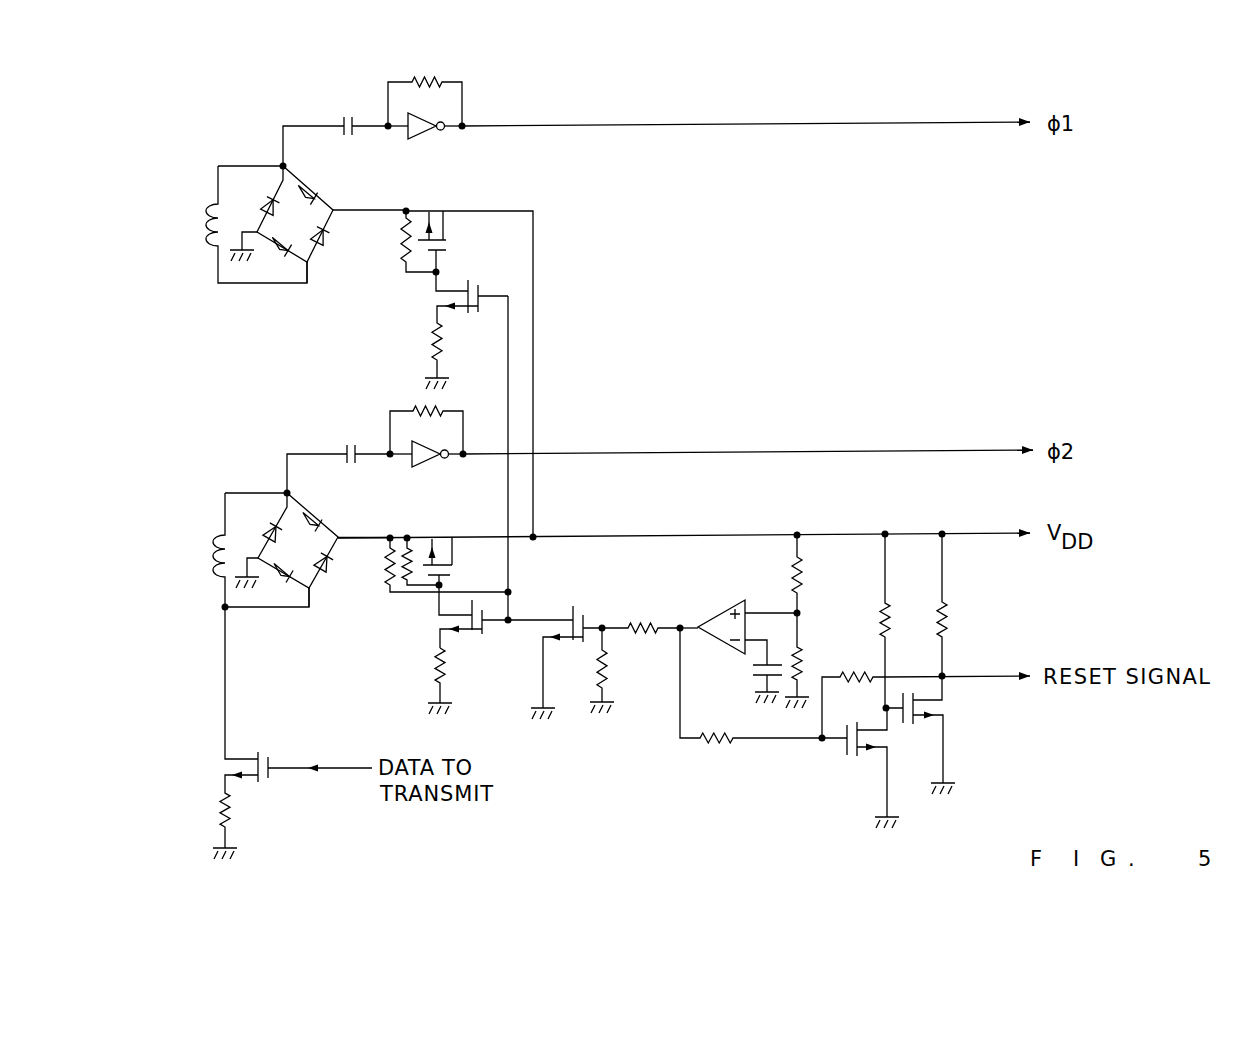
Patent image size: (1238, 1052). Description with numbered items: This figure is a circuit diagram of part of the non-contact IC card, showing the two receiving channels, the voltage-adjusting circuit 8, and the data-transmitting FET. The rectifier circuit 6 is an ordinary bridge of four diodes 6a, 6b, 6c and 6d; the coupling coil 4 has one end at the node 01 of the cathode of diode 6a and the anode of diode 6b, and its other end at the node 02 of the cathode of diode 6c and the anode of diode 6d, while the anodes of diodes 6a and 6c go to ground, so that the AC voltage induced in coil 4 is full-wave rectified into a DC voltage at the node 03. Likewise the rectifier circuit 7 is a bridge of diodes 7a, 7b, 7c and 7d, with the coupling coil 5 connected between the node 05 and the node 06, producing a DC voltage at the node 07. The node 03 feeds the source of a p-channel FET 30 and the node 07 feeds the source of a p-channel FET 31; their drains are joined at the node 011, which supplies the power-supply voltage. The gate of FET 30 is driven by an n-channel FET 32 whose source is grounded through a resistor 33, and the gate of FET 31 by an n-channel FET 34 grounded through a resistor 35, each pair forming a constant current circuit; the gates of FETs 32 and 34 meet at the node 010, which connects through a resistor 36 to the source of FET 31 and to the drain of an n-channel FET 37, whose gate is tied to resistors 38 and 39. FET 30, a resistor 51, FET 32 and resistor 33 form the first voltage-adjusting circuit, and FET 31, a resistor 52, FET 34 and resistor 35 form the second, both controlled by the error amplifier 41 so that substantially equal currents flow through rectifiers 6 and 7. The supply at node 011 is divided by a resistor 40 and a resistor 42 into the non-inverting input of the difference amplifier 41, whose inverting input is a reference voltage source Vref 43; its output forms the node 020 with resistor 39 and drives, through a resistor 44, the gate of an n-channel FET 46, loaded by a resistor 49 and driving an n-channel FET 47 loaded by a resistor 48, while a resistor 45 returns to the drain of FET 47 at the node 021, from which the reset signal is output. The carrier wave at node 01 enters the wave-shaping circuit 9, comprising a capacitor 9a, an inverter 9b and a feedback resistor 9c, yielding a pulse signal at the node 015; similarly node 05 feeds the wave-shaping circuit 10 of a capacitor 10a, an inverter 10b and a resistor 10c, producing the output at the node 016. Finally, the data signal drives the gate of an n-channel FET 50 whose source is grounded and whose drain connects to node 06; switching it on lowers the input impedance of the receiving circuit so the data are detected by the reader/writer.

The coupling coil 4 is at (206, 246).
The coupling coil 5 is at (213, 560).
The rectifier circuit 6 is at (260, 140).
The diode 6a is at (263, 200).
The diode 6b is at (318, 192).
The diode 6c is at (280, 266).
The diode 6d is at (331, 239).
The rectifier circuit 7 is at (260, 468).
The diode 7a is at (268, 533).
The diode 7b is at (320, 500).
The diode 7c is at (275, 590).
The diode 7d is at (326, 576).
The voltage-adjusting circuit 8 is at (658, 706).
The wave-shaping circuit 9 is at (370, 50).
The capacitor 9a is at (348, 115).
The inverter 9b is at (428, 133).
The resistor 9c is at (428, 78).
The wave-shaping circuit 10 is at (358, 363).
The capacitor 10a is at (352, 445).
The inverter 10b is at (428, 463).
The resistor 10c is at (413, 402).
The p-channel MOSFET 30 is at (451, 243).
The p-channel MOSFET 31 is at (445, 537).
The n-channel MOSFET 32 is at (472, 291).
The resistor 33 is at (448, 345).
The n-channel MOSFET 34 is at (481, 638).
The resistor 35 is at (434, 665).
The resistor 36 is at (386, 563).
The n-channel MOSFET 37 is at (583, 618).
The resistor 38 is at (583, 669).
The resistor 39 is at (640, 625).
The resistor 40 is at (792, 573).
The difference amplifier 41 is at (718, 636).
The resistor 42 is at (813, 652).
The reference voltage source Vref 43 is at (756, 678).
The resistor 44 is at (722, 743).
The resistor 45 is at (853, 672).
The n-channel MOSFET 46 is at (848, 752).
The n-channel MOSFET 47 is at (946, 716).
The resistor 48 is at (948, 618).
The resistor 49 is at (882, 606).
The n-channel MOSFET 50 is at (270, 756).
The resistor 51 is at (402, 263).
The resistor 52 is at (406, 586).
The node O1 01 is at (288, 169).
The node O2 02 is at (312, 268).
The node O3 03 is at (340, 210).
The node O5 05 is at (292, 500).
The node O6 06 is at (311, 598).
The node O7 07 is at (345, 536).
The node O10 010 is at (510, 594).
The node O11 011 is at (536, 535).
The node O15 015 is at (465, 129).
The node O16 016 is at (466, 448).
The node O20 020 is at (678, 632).
The node O21 021 is at (946, 672).